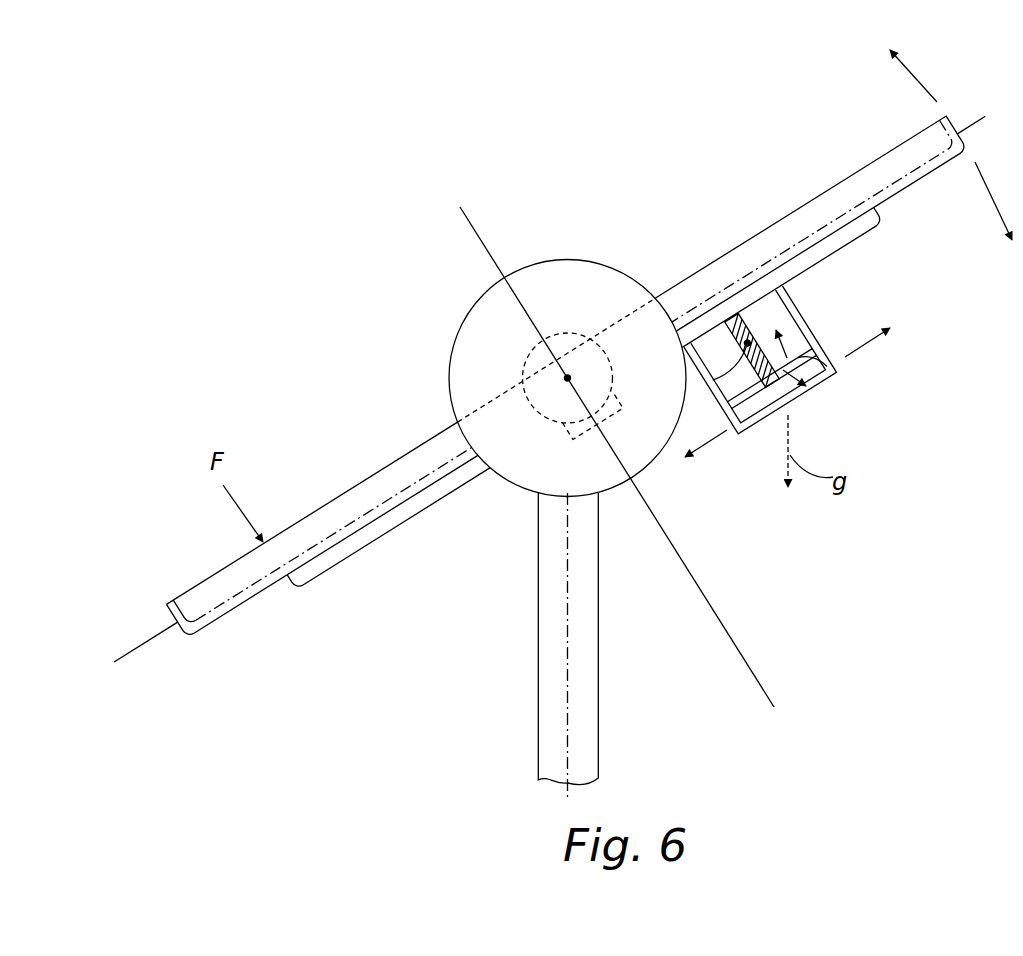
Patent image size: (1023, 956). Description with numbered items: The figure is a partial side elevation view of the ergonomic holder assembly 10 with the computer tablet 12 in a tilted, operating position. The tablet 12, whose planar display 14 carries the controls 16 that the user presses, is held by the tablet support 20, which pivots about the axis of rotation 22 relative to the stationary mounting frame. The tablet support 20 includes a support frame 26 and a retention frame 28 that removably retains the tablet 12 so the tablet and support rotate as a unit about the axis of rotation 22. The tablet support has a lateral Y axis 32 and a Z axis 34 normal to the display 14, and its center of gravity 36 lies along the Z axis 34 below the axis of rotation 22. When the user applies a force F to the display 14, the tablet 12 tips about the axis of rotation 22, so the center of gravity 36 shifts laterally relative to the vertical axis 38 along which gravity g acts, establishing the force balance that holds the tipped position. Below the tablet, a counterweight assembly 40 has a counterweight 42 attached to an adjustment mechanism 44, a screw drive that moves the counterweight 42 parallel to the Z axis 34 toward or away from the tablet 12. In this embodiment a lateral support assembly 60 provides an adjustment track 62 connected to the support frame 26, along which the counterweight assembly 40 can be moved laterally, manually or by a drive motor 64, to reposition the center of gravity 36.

The holder assembly 10 is at (225, 163).
The computer tablet 12 is at (815, 205).
The display 14 is at (300, 520).
The controls 16 is at (197, 587).
The tablet support 20 is at (522, 372).
The axis of rotation 22 is at (568, 378).
The support frame 26 is at (571, 438).
The retention frame 28 is at (198, 637).
The Y axis 32 is at (972, 118).
The Z axis 34 is at (727, 630).
The center of gravity 36 is at (715, 390).
The vertical axis 38 is at (570, 682).
The counterweight assembly 40 is at (835, 372).
The counterweight 42 is at (830, 368).
The adjustment mechanism 44 is at (808, 390).
The lateral support assembly 60 is at (327, 565).
The adjustment track 62 is at (363, 552).
The drive motor 64 is at (293, 585).